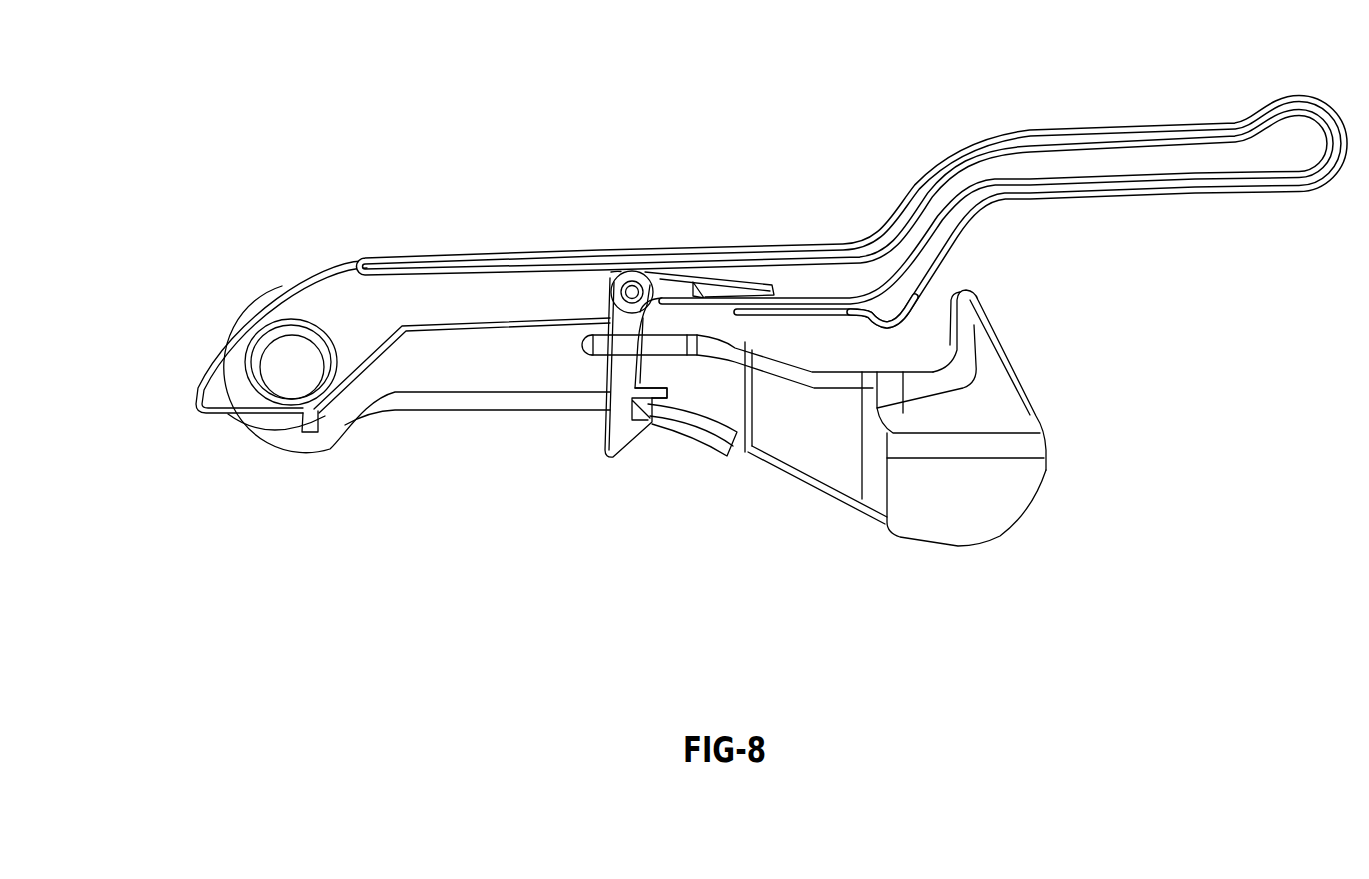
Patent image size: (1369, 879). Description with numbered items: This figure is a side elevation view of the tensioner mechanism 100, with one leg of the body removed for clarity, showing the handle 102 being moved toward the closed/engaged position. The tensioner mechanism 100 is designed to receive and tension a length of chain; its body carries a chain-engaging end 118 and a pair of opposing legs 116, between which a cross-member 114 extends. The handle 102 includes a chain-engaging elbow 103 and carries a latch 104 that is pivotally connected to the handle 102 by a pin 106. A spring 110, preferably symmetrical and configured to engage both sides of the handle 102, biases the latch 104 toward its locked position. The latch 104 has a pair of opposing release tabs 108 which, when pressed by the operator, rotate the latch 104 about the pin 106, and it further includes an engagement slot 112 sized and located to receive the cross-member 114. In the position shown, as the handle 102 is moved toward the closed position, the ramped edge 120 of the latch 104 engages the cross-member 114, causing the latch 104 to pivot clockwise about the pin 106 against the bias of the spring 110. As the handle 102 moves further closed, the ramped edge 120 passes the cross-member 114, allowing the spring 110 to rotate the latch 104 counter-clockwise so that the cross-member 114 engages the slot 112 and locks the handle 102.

The tensioner mechanism 100 is at (770, 344).
The handle 102 is at (852, 212).
The chain-engaging elbow 103 is at (889, 331).
The latch 104 is at (593, 366).
The pin 106 is at (664, 237).
The release tabs 108 is at (734, 233).
The spring 110 is at (583, 227).
The engagement slot 112 is at (733, 362).
The cross-member 114 is at (705, 464).
The legs 116 is at (621, 403).
The chain-engaging end 118 is at (1010, 380).
The ramped edge 120 is at (636, 461).